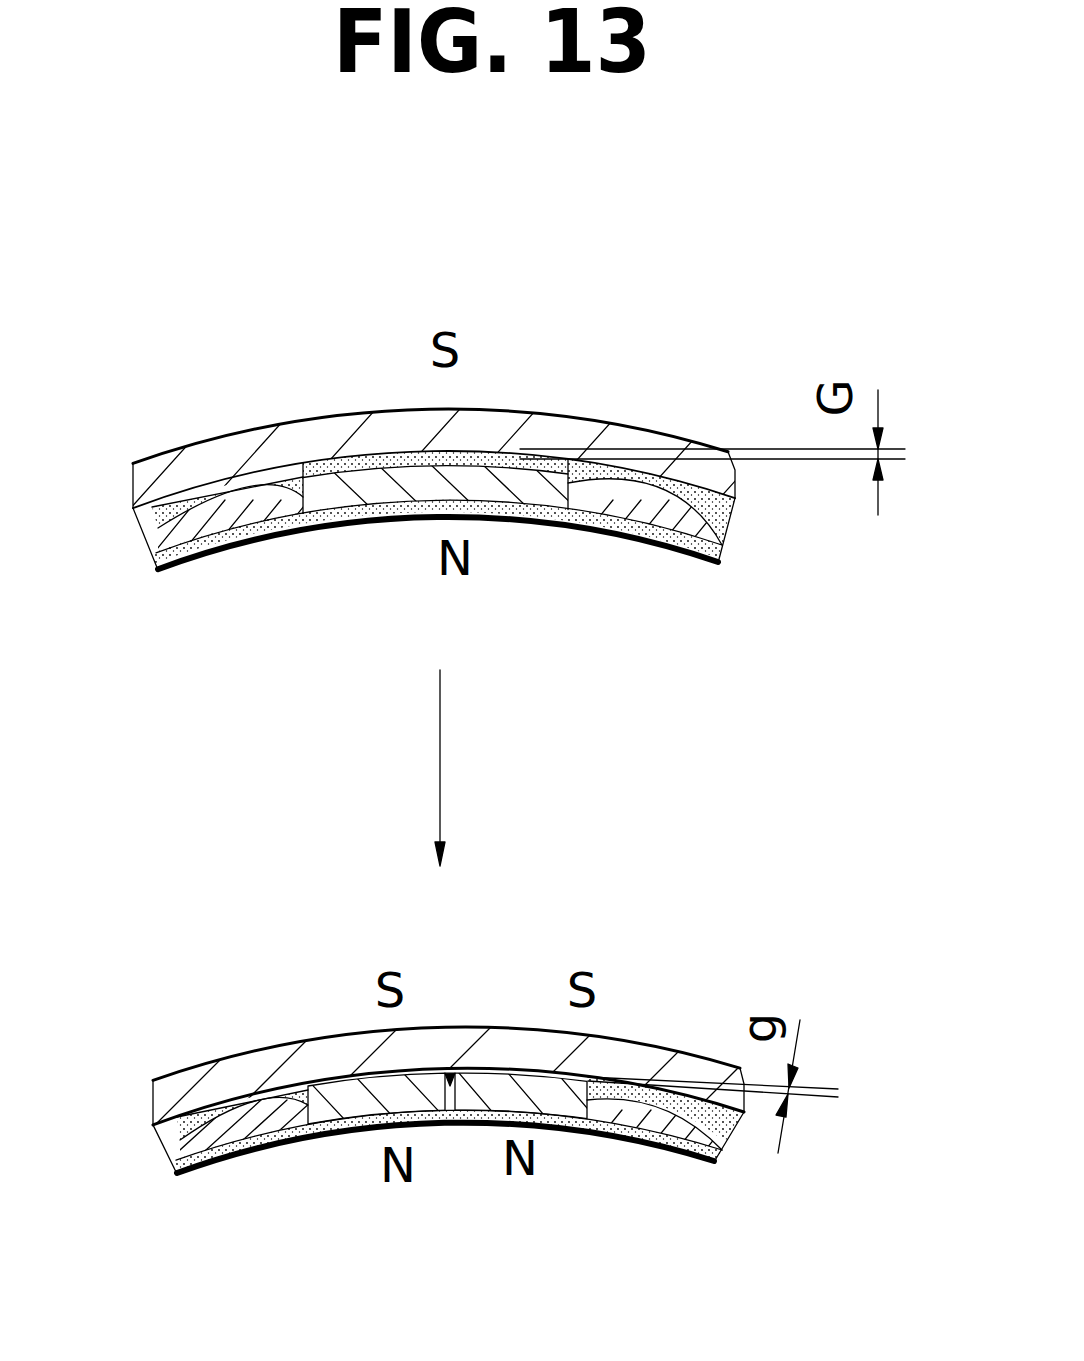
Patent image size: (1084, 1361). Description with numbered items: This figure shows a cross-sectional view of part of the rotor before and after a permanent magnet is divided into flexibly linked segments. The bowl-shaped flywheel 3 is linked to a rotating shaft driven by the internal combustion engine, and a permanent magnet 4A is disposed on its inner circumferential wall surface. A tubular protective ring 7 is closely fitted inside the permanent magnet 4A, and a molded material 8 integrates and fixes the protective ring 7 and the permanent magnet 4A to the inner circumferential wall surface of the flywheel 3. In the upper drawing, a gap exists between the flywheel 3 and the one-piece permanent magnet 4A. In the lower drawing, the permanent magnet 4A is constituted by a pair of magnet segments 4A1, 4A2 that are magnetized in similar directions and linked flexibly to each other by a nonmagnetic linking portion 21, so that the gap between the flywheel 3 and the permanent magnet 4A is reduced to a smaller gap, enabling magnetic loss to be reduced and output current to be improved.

The flywheel 3 is at (383, 410).
The molded material 8 is at (191, 490).
The protective ring 7 is at (295, 527).
The permanent magnet 4A is at (490, 487).
The magnet segment 4A1 is at (356, 1098).
The magnet segment 4A2 is at (560, 1093).
The nonmagnetic linking portion 21 is at (452, 1105).